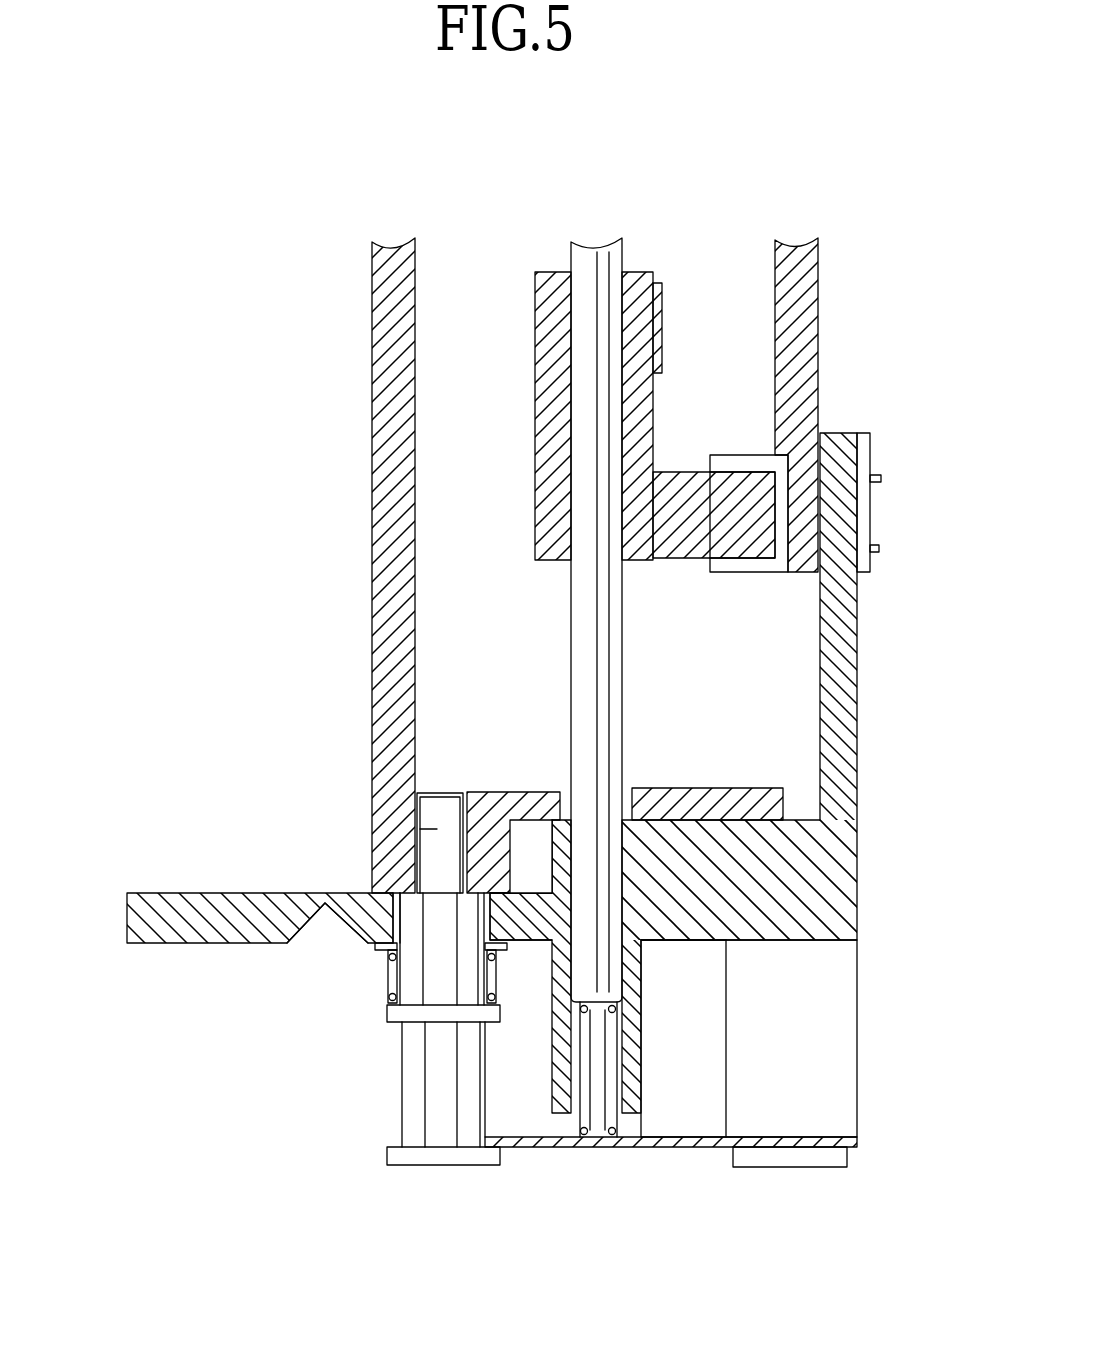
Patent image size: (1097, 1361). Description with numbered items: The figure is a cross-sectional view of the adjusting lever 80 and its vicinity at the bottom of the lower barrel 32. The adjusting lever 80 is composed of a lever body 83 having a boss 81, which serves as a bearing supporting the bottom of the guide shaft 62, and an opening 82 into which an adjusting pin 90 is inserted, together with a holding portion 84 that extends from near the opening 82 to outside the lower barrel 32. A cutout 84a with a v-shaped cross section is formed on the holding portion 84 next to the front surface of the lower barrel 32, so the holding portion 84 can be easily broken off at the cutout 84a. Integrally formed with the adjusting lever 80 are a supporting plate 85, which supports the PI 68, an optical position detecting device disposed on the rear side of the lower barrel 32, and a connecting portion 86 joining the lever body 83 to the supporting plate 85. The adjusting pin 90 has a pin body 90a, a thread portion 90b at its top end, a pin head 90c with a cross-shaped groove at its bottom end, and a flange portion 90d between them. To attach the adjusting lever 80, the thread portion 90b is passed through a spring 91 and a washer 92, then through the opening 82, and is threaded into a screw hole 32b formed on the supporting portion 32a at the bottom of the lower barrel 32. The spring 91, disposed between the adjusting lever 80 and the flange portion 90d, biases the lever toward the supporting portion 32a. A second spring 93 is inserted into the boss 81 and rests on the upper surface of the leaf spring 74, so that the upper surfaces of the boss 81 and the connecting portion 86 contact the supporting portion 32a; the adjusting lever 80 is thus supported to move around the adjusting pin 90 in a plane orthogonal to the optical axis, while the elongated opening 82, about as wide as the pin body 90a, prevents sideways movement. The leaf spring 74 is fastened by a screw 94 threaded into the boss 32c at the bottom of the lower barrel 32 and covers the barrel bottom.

The lower barrel 32 is at (362, 400).
The supporting portion 32a is at (712, 775).
The screw hole 32b is at (445, 793).
The boss 32c is at (858, 1040).
The guide shaft 62 is at (590, 245).
The PI 68 is at (750, 455).
The leaf spring 74 is at (702, 1147).
The adjusting lever 80 is at (284, 1005).
The boss (bearing) 81 is at (645, 1075).
The opening 82 is at (398, 935).
The lever body 83 is at (533, 948).
The holding portion 84 is at (127, 918).
The cutout 84a is at (312, 932).
The supporting plate 85 is at (858, 757).
The connecting portion 86 is at (690, 943).
The adjusting pin 90 is at (388, 1005).
The pin body 90a is at (402, 1110).
The thread portion 90b is at (437, 829).
The pin head 90c is at (402, 1167).
The flange portion 90d is at (402, 1100).
The spring 91 is at (388, 985).
The washer 92 is at (373, 947).
The spring 93 is at (618, 1125).
The screw 94 is at (785, 1167).